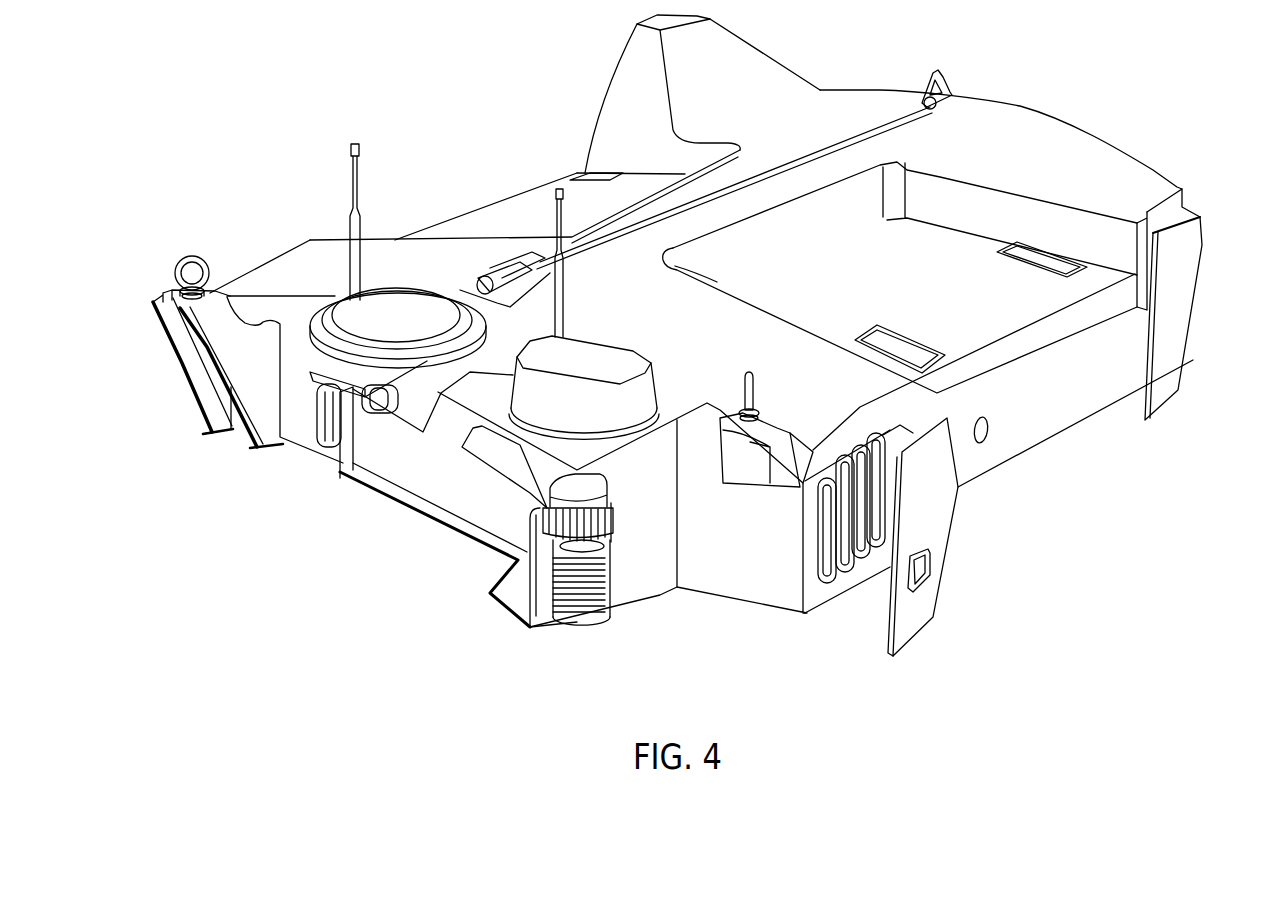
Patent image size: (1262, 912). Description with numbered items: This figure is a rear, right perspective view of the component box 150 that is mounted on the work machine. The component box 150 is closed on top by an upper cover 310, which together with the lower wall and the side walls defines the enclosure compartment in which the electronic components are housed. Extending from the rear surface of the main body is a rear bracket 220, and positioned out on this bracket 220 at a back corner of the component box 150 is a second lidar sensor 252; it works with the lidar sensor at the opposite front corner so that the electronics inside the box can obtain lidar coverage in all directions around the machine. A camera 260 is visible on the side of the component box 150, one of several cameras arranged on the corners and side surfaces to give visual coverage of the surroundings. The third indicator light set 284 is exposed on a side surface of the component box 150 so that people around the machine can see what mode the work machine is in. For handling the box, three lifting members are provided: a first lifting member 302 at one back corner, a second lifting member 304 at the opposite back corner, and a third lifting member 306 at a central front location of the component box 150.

The component box 150 is at (1003, 389).
The rear bracket 220 is at (585, 470).
The second lidar sensor 252 is at (612, 588).
The camera 260 is at (988, 432).
The third indicator light set 284 is at (325, 430).
The first lifting member 302 is at (188, 258).
The second lifting member 304 is at (750, 385).
The third lifting member 306 is at (945, 80).
The upper cover 310 is at (1090, 155).